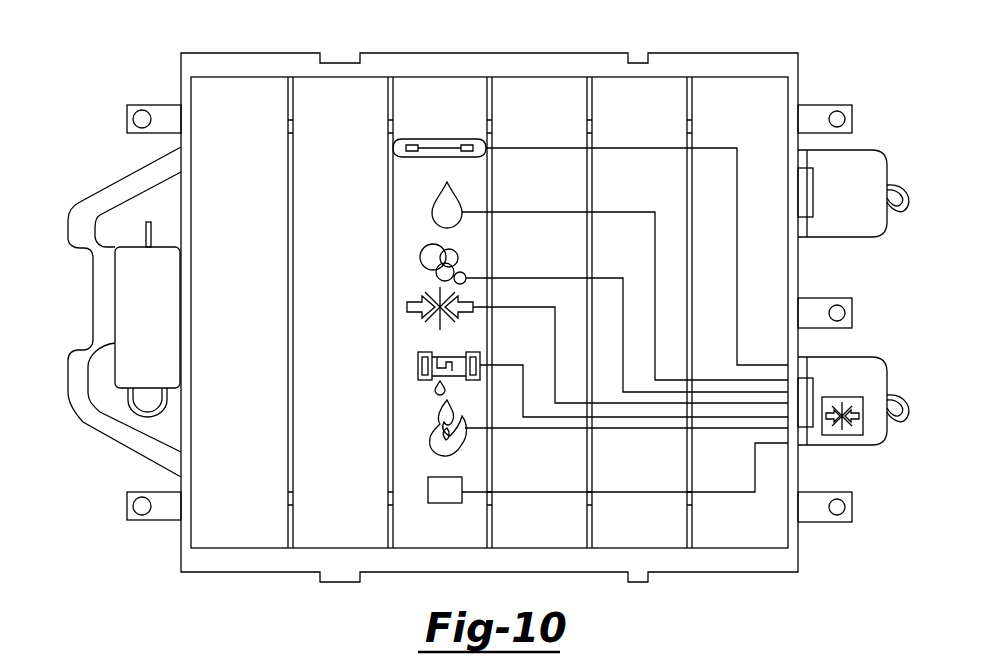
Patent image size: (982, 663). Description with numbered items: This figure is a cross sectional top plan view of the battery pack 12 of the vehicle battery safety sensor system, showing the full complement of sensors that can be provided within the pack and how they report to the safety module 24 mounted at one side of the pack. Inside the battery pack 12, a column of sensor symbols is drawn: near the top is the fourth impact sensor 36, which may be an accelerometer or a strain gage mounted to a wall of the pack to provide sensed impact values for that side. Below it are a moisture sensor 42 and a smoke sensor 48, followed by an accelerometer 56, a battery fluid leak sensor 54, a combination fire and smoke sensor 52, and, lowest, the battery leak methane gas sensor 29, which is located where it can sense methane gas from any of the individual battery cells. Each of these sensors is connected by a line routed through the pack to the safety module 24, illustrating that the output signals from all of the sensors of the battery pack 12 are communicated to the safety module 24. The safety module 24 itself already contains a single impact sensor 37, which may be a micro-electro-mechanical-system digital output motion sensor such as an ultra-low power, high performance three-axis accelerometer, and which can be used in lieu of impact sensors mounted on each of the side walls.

The battery pack 12 is at (846, 40).
The safety module 24 is at (863, 377).
The battery leak methane gas sensor 29 is at (428, 490).
The fourth impact sensor 36 is at (440, 139).
The impact sensor 37 is at (863, 418).
The moisture sensor 42 is at (432, 212).
The smoke sensor 48 is at (420, 255).
The combination fire and smoke sensor 52 is at (430, 432).
The battery fluid leak sensor 54 is at (418, 365).
The accelerometer 56 is at (407, 307).